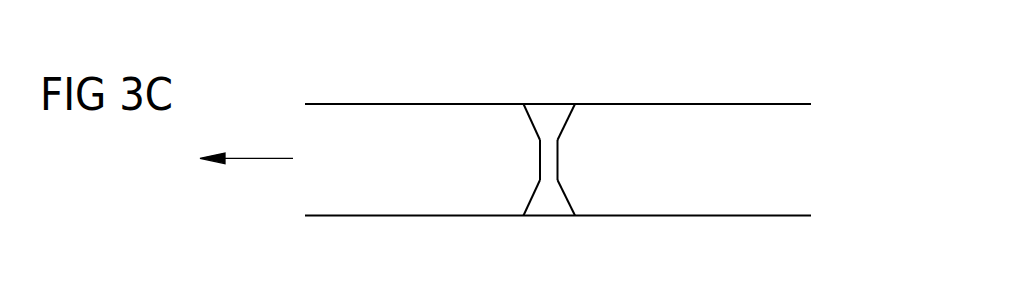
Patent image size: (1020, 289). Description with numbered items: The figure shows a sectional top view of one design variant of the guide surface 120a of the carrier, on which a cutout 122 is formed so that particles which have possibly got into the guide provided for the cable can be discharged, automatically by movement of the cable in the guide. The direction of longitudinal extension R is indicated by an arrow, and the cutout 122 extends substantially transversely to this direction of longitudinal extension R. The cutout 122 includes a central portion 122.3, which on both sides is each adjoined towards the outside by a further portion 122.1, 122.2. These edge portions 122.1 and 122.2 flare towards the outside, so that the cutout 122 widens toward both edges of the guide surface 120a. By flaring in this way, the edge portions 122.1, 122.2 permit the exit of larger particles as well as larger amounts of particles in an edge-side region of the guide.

The guide surface 120a is at (782, 164).
The cutout 122 is at (602, 149).
The further portion 122.1 is at (532, 122).
The further portion 122.2 is at (566, 198).
The central portion 122.3 is at (558, 159).
The direction of longitudinal extension R is at (246, 145).